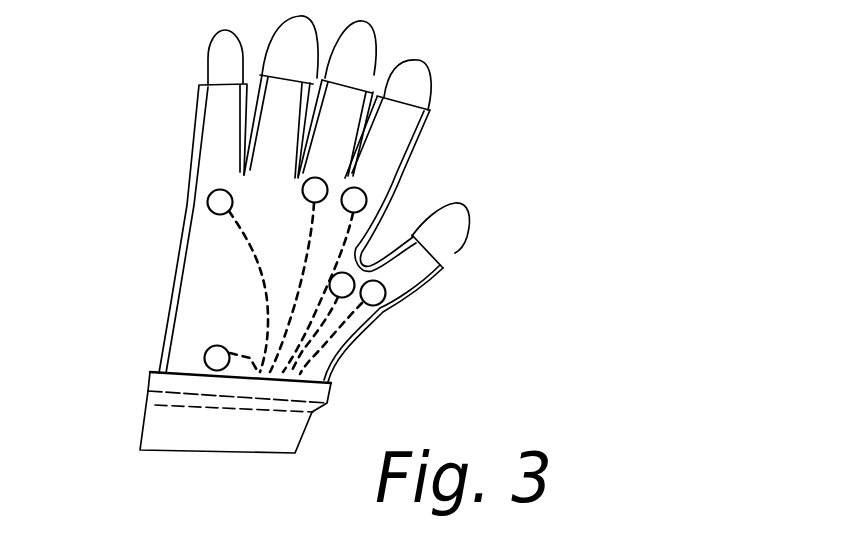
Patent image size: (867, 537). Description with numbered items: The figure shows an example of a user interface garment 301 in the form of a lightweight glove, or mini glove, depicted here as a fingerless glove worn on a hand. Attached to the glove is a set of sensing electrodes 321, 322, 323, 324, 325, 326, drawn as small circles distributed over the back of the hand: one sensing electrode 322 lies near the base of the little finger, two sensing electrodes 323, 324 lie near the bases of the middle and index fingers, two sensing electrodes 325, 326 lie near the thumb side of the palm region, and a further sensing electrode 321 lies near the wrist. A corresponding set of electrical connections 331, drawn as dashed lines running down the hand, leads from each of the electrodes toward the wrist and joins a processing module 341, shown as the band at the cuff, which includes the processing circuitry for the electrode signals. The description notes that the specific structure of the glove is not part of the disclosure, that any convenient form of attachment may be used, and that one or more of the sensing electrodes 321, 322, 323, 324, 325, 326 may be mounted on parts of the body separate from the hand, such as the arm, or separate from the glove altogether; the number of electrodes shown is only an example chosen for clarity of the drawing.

The user interface garment 301 is at (188, 148).
The sensing electrode 321 is at (207, 351).
The sensing electrode 322 is at (207, 192).
The sensing electrode 323 is at (318, 178).
The sensing electrode 324 is at (362, 190).
The sensing electrode 325 is at (383, 304).
The sensing electrode 326 is at (347, 297).
The electrical connections 331 is at (323, 277).
The processing module 341 is at (188, 381).